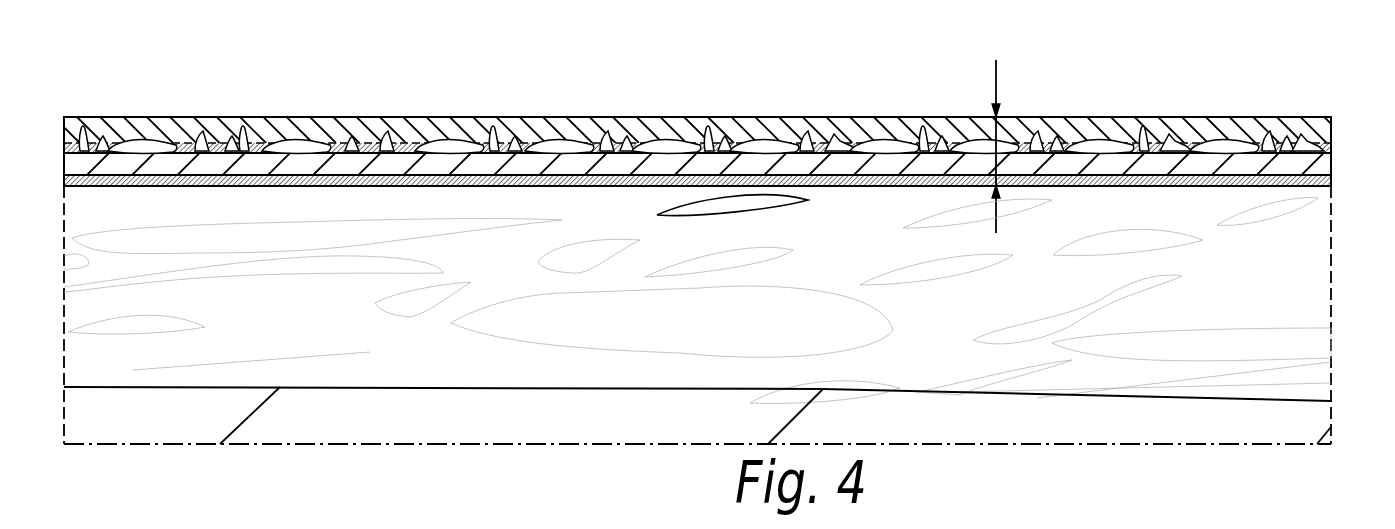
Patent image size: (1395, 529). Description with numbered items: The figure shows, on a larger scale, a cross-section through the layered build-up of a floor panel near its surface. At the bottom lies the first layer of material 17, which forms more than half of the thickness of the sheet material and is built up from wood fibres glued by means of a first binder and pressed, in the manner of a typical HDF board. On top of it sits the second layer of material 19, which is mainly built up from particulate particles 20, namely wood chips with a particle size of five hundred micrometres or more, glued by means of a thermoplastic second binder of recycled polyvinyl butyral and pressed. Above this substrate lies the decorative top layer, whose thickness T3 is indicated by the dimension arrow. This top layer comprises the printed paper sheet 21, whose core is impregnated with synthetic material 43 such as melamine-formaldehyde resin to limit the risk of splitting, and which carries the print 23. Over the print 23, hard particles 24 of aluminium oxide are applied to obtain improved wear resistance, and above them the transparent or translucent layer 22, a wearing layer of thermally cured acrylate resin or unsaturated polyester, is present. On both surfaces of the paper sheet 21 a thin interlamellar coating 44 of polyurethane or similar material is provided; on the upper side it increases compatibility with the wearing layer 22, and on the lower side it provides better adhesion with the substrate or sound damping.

The first layer of material 17 is at (480, 420).
The second layer of material 19 is at (1165, 297).
The particulate particles 20 is at (577, 260).
The printed paper sheet 21 is at (70, 163).
The transparent or translucent layer 22 is at (188, 128).
The print 23 is at (544, 148).
The hard particles 24 is at (760, 140).
The synthetic material 43 is at (1307, 162).
The interlamellar coating 44 is at (1326, 155).
The thickness of the decorative top layer T3 is at (1011, 145).